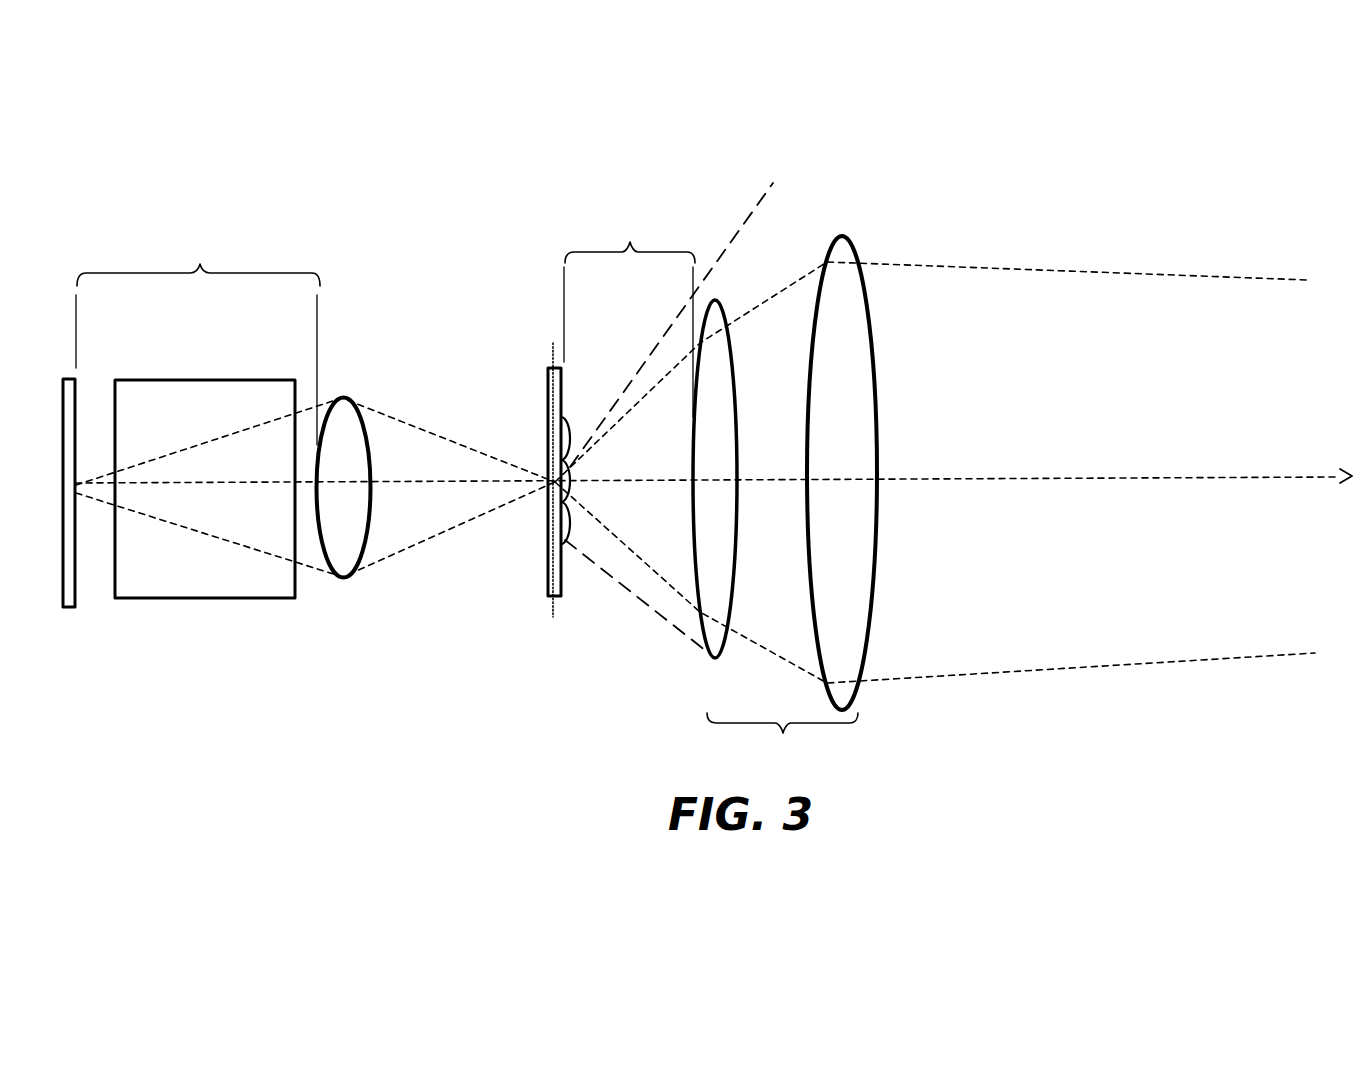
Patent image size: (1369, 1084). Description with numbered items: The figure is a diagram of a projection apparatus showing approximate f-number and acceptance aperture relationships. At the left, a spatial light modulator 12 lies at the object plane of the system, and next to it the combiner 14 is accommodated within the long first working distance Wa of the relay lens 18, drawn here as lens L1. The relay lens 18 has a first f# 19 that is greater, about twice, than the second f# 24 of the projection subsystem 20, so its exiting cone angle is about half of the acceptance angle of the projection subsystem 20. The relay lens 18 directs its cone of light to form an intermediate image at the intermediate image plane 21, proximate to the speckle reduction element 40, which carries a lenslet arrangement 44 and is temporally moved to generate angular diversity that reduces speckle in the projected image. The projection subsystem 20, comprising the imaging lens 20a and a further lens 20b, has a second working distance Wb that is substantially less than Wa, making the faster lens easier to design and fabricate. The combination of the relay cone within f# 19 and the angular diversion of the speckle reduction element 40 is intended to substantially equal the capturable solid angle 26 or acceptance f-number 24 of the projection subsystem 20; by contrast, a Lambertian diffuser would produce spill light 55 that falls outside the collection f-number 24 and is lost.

The spatial light modulator 12 is at (72, 607).
The dichroic combiner 14 is at (196, 599).
The relay lens 18 is at (318, 598).
The first f# 19 is at (387, 415).
The collimating lens L1 is at (362, 557).
The intermediate image plane 21 is at (553, 606).
The speckle reduction element 40 is at (550, 543).
The lenslet arrangement 44 is at (571, 561).
The first working distance Wa is at (198, 339).
The second working distance Wb is at (629, 312).
The second f# 24 is at (693, 608).
The capturable solid angle 26 is at (635, 577).
The spill light 55 is at (752, 215).
The projection subsystem 20 is at (810, 472).
The imaging lens 20a is at (716, 302).
The second lens 20b is at (848, 238).